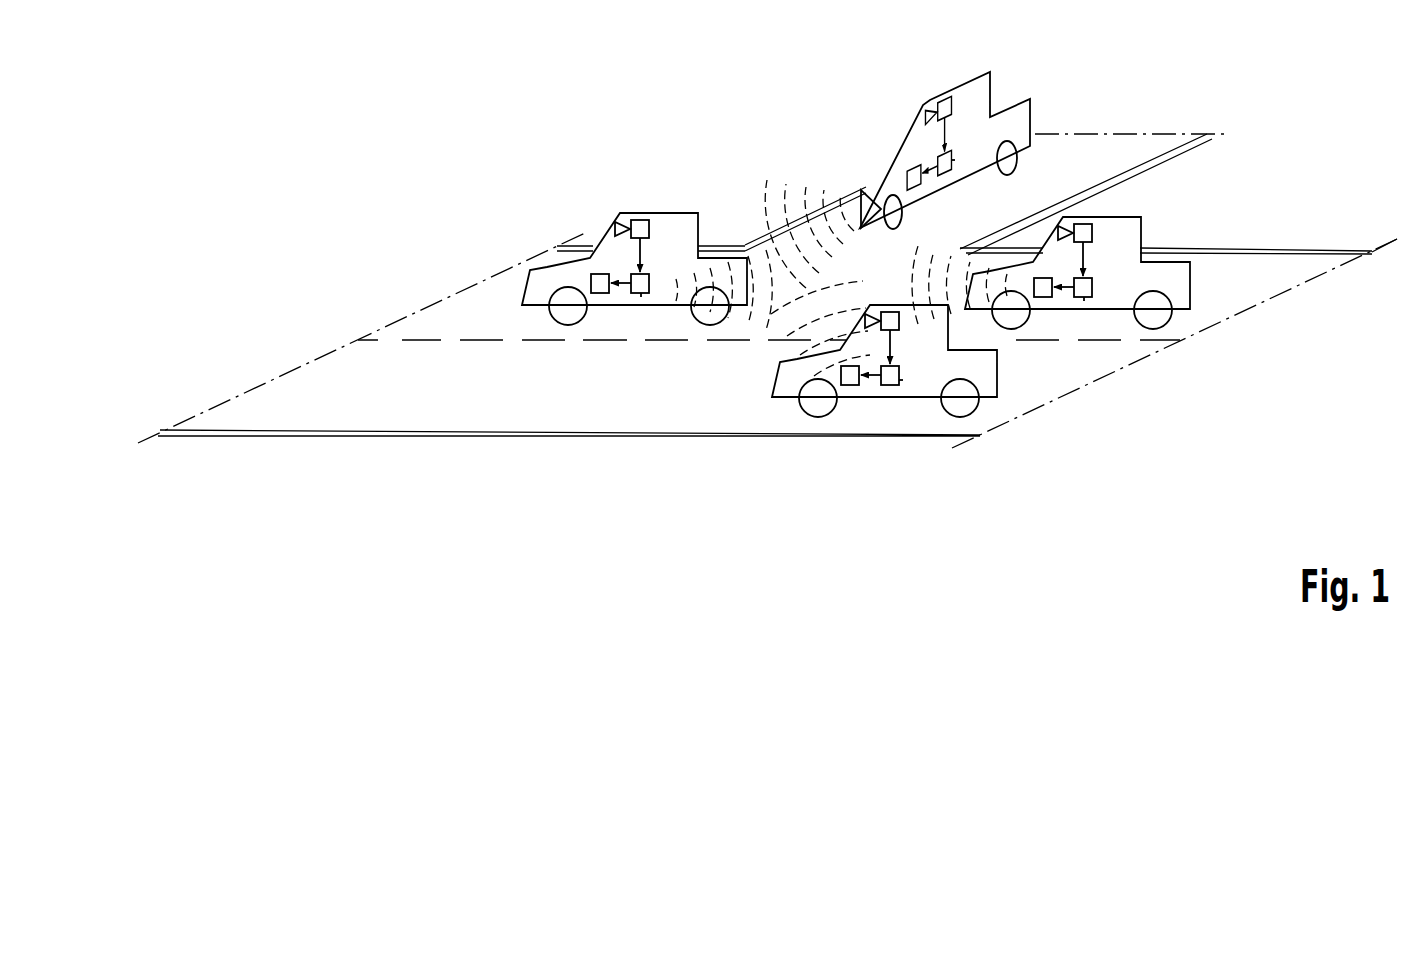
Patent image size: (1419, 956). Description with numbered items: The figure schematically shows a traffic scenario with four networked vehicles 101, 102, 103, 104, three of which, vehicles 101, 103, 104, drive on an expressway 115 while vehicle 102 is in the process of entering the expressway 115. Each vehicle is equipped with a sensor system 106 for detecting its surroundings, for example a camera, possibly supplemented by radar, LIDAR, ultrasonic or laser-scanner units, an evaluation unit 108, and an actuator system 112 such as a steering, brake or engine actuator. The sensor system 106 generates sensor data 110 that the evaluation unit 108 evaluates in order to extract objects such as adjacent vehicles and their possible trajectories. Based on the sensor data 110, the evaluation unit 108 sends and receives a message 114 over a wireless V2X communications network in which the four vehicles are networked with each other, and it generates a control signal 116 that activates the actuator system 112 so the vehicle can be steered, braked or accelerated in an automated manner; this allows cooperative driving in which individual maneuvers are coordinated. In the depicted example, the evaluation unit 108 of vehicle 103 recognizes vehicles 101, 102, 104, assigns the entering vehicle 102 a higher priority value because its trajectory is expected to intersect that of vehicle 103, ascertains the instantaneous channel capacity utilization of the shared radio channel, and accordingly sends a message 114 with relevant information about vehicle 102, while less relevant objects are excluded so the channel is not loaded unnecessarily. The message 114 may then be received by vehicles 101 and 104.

The vehicle 101 is at (546, 266).
The vehicle 102 is at (1028, 99).
The vehicle 103 is at (1189, 298).
The vehicle 104 is at (998, 394).
The sensor system 106 is at (640, 219).
The evaluation unit 108 is at (641, 295).
The sensor data 110 is at (642, 250).
The actuator system 112 is at (598, 273).
The message 114 is at (741, 250).
The expressway 115 is at (517, 405).
The control signal 116 is at (620, 286).